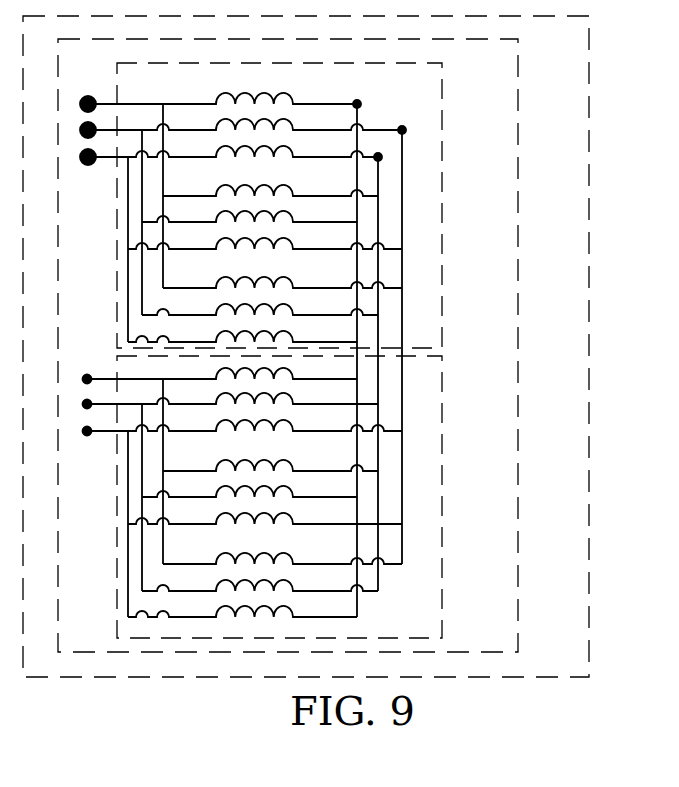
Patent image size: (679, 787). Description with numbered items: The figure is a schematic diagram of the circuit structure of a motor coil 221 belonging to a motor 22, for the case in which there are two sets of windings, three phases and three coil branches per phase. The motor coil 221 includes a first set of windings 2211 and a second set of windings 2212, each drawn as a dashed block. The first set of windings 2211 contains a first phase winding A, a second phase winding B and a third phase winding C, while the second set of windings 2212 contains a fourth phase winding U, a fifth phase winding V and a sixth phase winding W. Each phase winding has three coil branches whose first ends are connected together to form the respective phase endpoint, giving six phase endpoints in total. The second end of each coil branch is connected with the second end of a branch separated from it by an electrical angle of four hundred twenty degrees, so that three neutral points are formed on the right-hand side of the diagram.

The motor 22 is at (589, 345).
The motor coil 221 is at (519, 345).
The first set of windings 2211 is at (444, 217).
The second set of windings 2212 is at (443, 497).